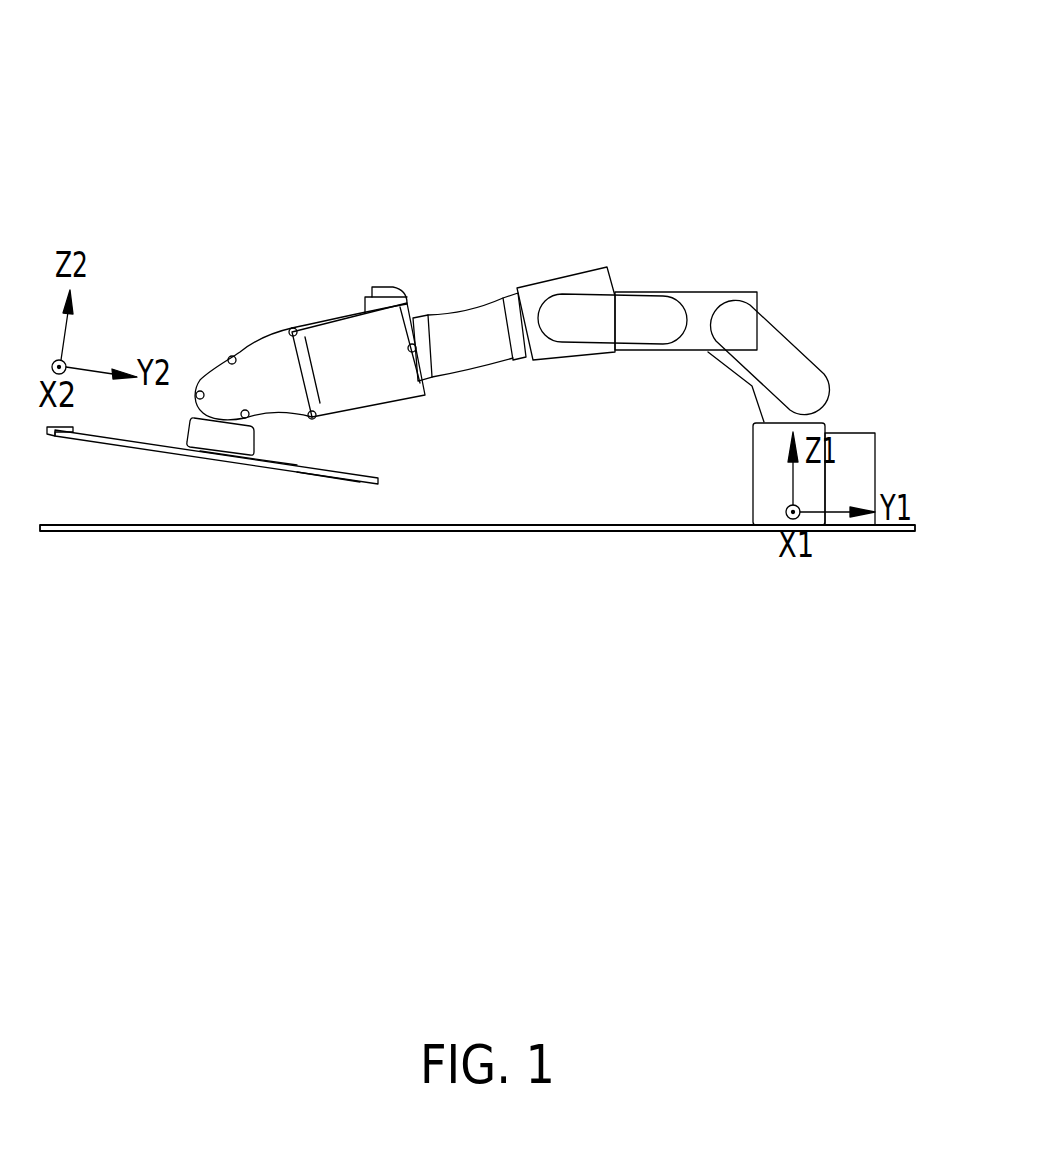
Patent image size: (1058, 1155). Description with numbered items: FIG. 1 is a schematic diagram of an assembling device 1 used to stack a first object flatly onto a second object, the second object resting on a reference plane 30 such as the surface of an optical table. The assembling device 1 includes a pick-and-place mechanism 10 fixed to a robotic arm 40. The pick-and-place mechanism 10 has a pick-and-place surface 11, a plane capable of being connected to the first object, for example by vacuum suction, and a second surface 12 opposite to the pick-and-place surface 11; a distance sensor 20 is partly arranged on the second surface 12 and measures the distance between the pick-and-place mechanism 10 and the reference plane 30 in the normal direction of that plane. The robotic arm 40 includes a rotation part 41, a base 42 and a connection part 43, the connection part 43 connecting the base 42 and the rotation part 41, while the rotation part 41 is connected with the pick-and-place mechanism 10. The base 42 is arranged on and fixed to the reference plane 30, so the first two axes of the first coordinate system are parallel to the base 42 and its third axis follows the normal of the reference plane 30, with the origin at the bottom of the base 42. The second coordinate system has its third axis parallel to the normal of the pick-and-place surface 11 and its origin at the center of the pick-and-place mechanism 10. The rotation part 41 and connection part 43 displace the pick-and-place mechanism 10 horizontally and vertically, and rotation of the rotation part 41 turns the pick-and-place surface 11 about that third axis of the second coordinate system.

The assembling device 1 is at (650, 57).
The pick-and-place mechanism 10 is at (357, 475).
The pick-and-place surface 11 is at (317, 470).
The second surface 12 is at (297, 465).
The distance sensor 20 is at (52, 437).
The reference plane 30 is at (397, 526).
The robotic arm 40 is at (460, 262).
The rotation part 41 is at (218, 440).
The base 42 is at (773, 475).
The connection part 43 is at (778, 345).